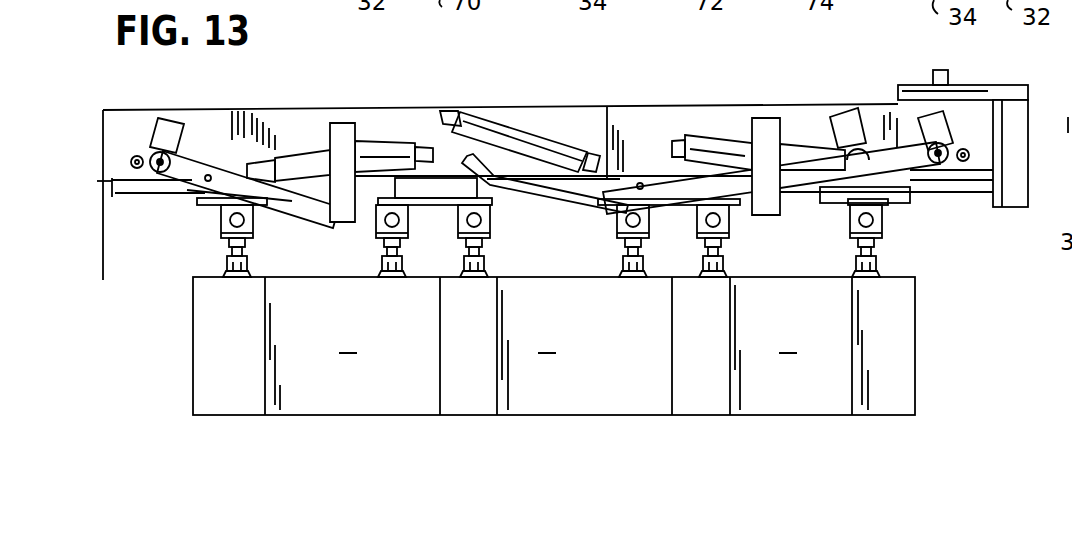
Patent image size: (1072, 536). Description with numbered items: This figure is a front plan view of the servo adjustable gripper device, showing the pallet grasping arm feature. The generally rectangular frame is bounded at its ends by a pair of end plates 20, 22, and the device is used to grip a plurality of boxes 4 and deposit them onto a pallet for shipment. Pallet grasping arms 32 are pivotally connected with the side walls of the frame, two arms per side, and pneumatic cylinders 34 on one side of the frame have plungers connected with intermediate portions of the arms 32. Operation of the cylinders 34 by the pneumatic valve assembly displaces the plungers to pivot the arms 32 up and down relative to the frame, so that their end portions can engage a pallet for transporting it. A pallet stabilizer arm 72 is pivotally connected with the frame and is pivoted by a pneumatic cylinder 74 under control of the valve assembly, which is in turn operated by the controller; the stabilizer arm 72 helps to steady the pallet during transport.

The end plate 20 is at (103, 130).
The end plate 22 is at (1017, 142).
The pallet grasping arm 32 is at (338, 150).
The pneumatic cylinder 34 is at (397, 140).
The pneumatic cylinder 74 is at (513, 140).
The pallet stabilizer arm 72 is at (560, 203).
The box 4 is at (554, 346).